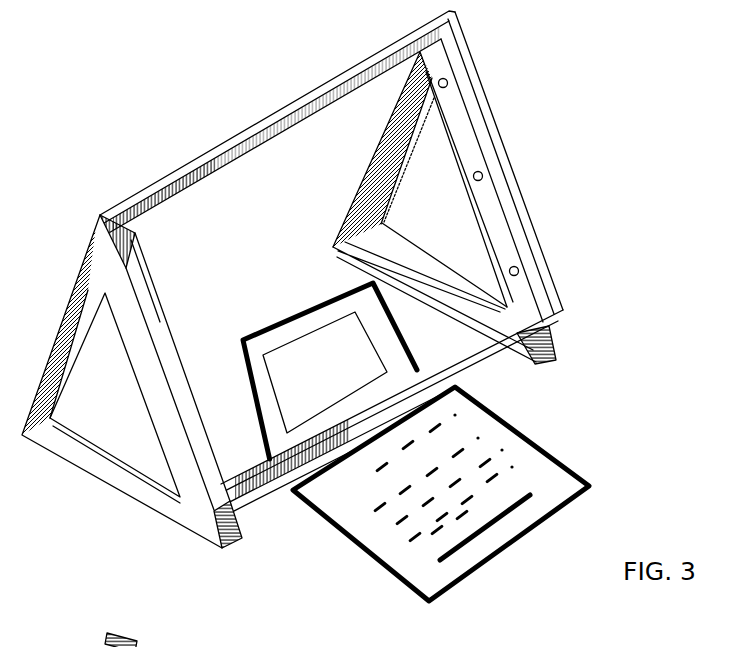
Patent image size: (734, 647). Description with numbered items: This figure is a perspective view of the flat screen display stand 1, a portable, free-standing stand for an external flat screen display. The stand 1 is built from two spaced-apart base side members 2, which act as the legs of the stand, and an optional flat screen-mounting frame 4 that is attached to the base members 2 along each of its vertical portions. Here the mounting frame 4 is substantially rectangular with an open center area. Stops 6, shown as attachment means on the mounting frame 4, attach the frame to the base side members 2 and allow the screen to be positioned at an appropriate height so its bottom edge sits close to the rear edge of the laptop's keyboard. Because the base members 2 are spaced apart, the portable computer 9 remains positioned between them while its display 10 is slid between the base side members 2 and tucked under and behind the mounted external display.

The flat screen display stand 1 is at (211, 112).
The base side members 2 is at (64, 301).
The flat screen-mounting frame 4 is at (475, 66).
The stops 6 is at (494, 174).
The portable computer 9 is at (558, 436).
The portable computer display 10 is at (264, 313).